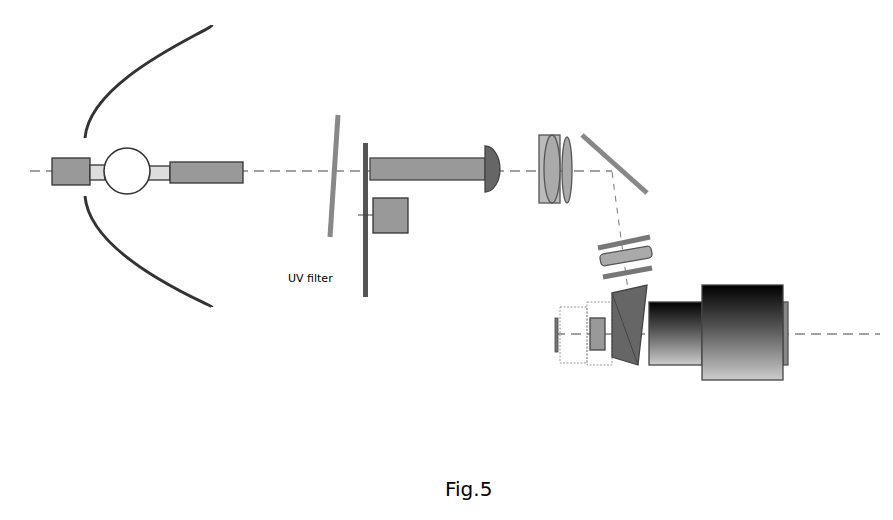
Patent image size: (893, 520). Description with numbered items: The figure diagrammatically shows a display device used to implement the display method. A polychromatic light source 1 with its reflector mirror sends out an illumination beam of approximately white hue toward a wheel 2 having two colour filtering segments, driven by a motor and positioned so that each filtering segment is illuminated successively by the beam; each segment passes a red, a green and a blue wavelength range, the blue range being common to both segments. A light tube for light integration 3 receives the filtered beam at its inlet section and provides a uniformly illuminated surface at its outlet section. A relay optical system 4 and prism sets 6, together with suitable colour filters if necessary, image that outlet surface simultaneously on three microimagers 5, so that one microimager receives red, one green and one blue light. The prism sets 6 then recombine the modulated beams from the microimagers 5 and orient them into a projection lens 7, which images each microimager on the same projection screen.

The polychromatic light source 1 is at (123, 126).
The wheel 2 is at (364, 128).
The light tube for light integration 3 is at (450, 131).
The relay optical system 4 is at (593, 141).
The microimagers 5 is at (597, 293).
The prism sets 6 is at (650, 415).
The projection lens 7 is at (718, 356).